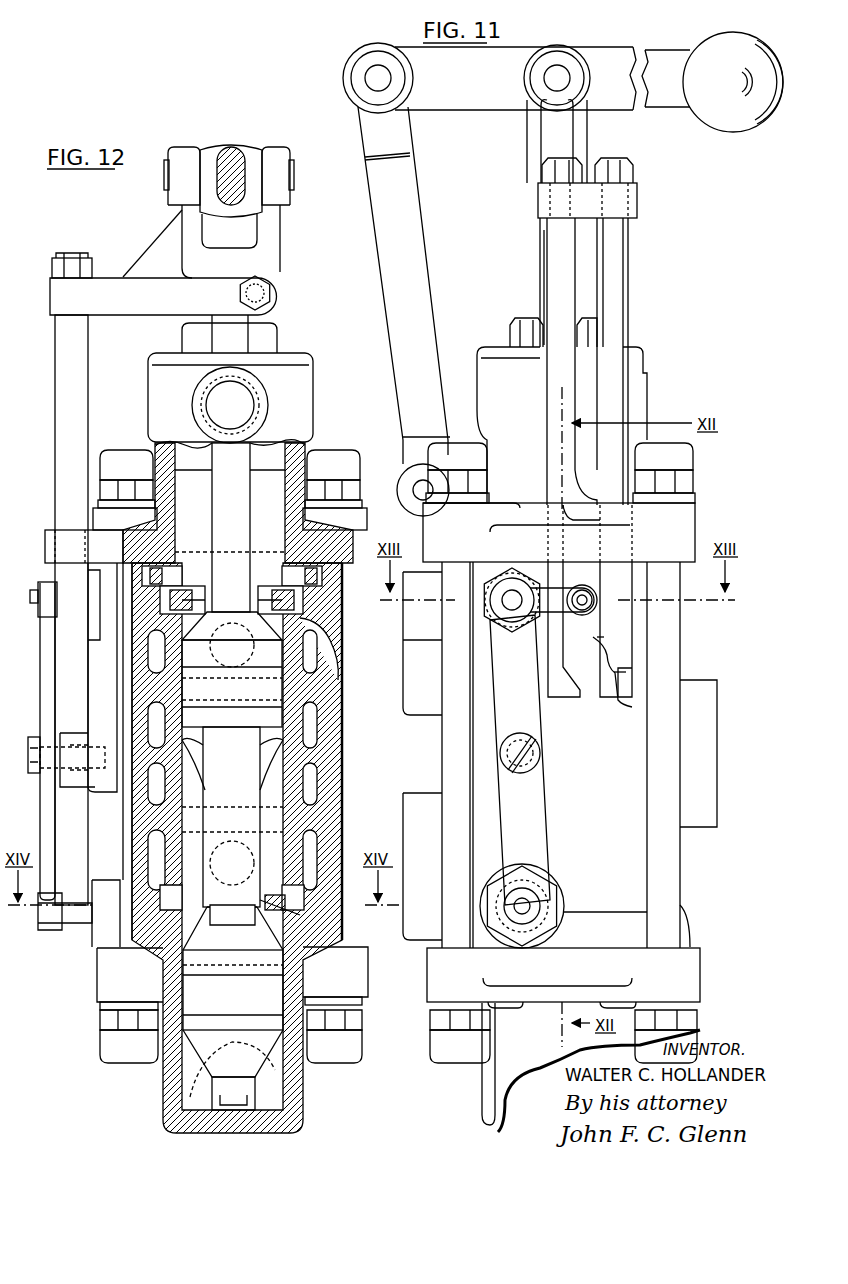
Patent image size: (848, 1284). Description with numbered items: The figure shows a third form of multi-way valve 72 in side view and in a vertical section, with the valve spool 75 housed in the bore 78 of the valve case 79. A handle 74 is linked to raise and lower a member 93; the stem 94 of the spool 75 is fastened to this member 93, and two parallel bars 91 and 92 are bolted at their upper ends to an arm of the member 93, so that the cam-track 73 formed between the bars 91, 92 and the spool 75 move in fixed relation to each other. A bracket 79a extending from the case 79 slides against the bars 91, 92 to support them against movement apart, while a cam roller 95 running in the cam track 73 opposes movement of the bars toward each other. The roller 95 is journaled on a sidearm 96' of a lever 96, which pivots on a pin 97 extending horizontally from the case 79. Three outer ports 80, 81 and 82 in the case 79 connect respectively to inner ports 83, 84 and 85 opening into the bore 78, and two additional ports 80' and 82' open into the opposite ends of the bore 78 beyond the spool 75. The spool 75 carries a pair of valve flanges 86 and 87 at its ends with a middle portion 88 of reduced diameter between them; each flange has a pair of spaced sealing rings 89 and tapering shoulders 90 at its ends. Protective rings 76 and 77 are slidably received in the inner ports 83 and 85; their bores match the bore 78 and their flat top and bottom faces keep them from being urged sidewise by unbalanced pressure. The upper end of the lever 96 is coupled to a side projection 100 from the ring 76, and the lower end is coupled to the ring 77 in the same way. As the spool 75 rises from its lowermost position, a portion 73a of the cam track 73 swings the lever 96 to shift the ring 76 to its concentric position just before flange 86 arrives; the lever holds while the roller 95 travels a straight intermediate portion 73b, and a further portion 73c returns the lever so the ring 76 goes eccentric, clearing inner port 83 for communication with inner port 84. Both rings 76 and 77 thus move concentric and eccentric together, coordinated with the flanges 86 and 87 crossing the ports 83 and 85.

In FIG. 12, the multi-way valve 72 is at (362, 453).
In FIG. 11, the multi-way valve 72 is at (668, 368).
In FIG. 11, the cam-track 73 is at (632, 706).
In FIG. 11, the portion of the cam track 73a is at (573, 520).
In FIG. 11, the straight intermediate portion of the cam track 73b is at (597, 637).
In FIG. 11, the lever stop 73c is at (618, 672).
In FIG. 12, the handle 74 is at (233, 147).
In FIG. 11, the handle 74 is at (613, 55).
In FIG. 12, the valve spool 75 is at (262, 1095).
In FIG. 12, the protective ring 76 is at (340, 603).
In FIG. 12, the protective ring 77 is at (292, 880).
In FIG. 12, the bore 78 is at (277, 515).
In FIG. 12, the valve case 79 is at (273, 720).
In FIG. 11, the valve case 79 is at (637, 855).
In FIG. 12, the bracket 79a is at (45, 545).
In FIG. 11, the bracket 79a is at (638, 532).
In FIG. 12, the outer port 80 is at (340, 648).
In FIG. 11, the outer port 80 is at (406, 657).
In FIG. 12, the additional port 80' is at (250, 398).
In FIG. 11, the additional port 80' is at (592, 410).
In FIG. 11, the outer port 81 is at (717, 747).
In FIG. 12, the outer port 82 is at (270, 866).
In FIG. 11, the outer port 82 is at (537, 938).
In FIG. 12, the additional port 82' is at (198, 1082).
In FIG. 11, the additional port 82' is at (466, 1064).
In FIG. 12, the inner port 83 is at (330, 578).
In FIG. 12, the inner port 84 is at (285, 770).
In FIG. 12, the inner port 85 is at (290, 900).
In FIG. 12, the valve flange 86 is at (275, 692).
In FIG. 12, the valve flange 87 is at (265, 997).
In FIG. 12, the middle portion 88 is at (255, 825).
In FIG. 12, the sealing rings 89 is at (300, 680).
In FIG. 12, the tapering shoulders 90 is at (310, 650).
In FIG. 11, the bar 91 is at (548, 283).
In FIG. 12, the bar 92 is at (55, 393).
In FIG. 11, the bar 92 is at (620, 247).
In FIG. 12, the member 93 is at (50, 296).
In FIG. 11, the member 93 is at (637, 200).
In FIG. 12, the stem 94 is at (242, 465).
In FIG. 11, the stem 94 is at (540, 258).
In FIG. 11, the cam roller 95 is at (593, 617).
In FIG. 12, the lever 96 is at (37, 756).
In FIG. 11, the lever 96 is at (486, 758).
In FIG. 12, the sidearm 96' is at (32, 613).
In FIG. 11, the sidearm 96' is at (574, 629).
In FIG. 12, the pin 97 is at (30, 745).
In FIG. 11, the pin 97 is at (500, 757).
In FIG. 12, the side projection 100 is at (138, 647).